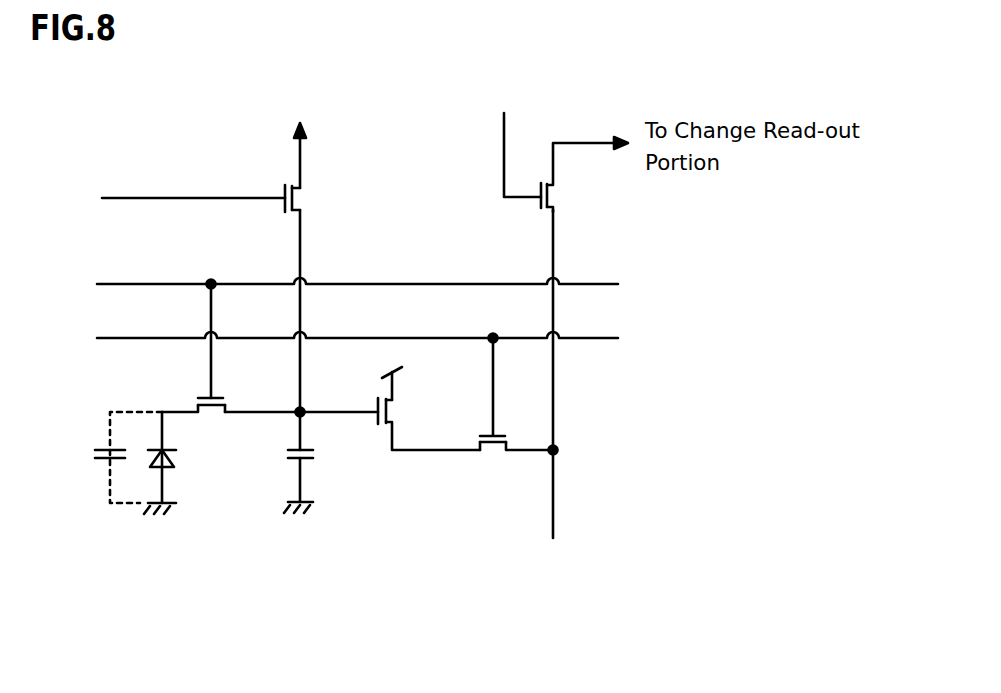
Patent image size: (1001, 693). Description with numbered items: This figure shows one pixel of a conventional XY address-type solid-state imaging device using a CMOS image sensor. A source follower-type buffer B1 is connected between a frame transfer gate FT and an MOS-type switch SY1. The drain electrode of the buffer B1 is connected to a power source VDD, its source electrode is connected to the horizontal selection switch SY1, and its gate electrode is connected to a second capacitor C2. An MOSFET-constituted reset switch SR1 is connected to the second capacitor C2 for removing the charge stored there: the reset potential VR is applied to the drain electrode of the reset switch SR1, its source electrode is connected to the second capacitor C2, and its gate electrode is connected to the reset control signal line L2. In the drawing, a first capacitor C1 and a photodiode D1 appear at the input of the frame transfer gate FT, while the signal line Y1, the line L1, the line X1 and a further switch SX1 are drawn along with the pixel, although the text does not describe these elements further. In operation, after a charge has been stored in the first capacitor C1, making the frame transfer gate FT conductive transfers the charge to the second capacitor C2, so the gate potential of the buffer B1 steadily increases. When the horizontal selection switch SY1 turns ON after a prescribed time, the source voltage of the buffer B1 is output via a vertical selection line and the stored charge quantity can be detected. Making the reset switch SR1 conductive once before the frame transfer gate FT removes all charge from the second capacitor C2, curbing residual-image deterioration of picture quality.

The reset control signal line L2 is at (150, 198).
The first control line L1 is at (150, 284).
The vertical signal line Y1 is at (148, 338).
The reset potential VR is at (300, 141).
The horizontal selection line X1 is at (504, 141).
The reset switch SR1 is at (302, 200).
The horizontal selection switch transistor SX1 is at (557, 193).
The power source VDD is at (376, 369).
The source follower-type buffer B1 is at (396, 408).
The frame transfer gate FT is at (215, 415).
The first capacitor C1 is at (88, 460).
The photodiode D1 is at (176, 463).
The second capacitor C2 is at (316, 454).
The horizontal selection switch SY1 is at (491, 453).